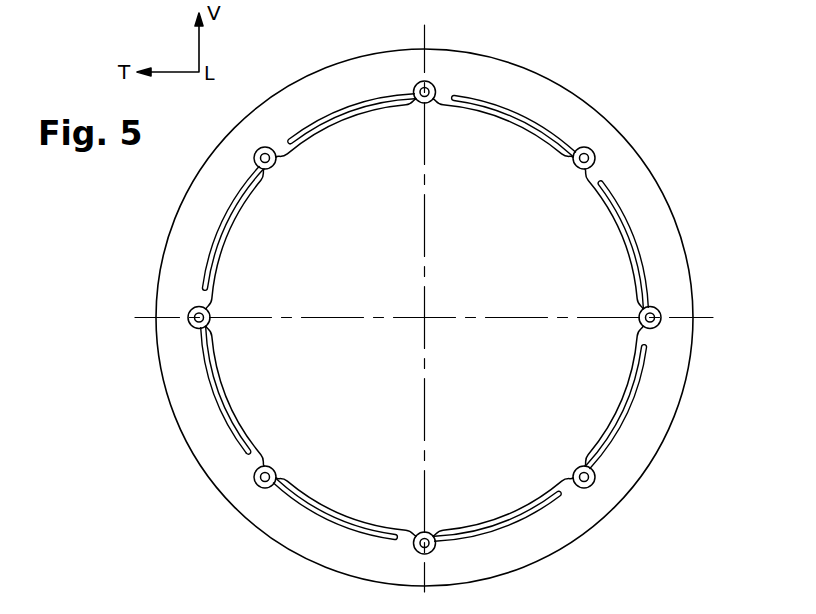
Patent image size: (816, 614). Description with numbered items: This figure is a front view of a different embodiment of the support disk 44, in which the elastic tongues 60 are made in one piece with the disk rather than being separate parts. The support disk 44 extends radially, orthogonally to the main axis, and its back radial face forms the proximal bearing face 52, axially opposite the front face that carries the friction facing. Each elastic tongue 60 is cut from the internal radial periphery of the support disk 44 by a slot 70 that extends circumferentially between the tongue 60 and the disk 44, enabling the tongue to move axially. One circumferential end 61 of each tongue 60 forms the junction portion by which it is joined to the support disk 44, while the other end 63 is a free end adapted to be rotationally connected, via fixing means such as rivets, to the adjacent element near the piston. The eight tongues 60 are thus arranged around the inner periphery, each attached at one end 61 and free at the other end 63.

The support disk 44 is at (646, 201).
The proximal bearing face 52 is at (648, 425).
The elastic tongue 60 is at (312, 498).
The circumferential end 61 is at (242, 466).
The free end 63 is at (209, 311).
The slot 70 is at (212, 393).